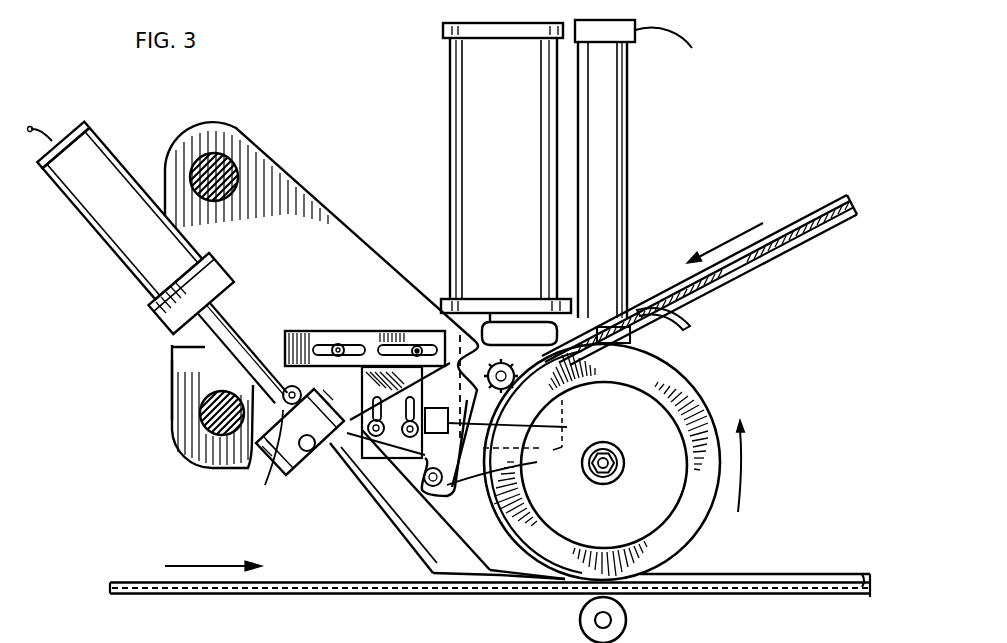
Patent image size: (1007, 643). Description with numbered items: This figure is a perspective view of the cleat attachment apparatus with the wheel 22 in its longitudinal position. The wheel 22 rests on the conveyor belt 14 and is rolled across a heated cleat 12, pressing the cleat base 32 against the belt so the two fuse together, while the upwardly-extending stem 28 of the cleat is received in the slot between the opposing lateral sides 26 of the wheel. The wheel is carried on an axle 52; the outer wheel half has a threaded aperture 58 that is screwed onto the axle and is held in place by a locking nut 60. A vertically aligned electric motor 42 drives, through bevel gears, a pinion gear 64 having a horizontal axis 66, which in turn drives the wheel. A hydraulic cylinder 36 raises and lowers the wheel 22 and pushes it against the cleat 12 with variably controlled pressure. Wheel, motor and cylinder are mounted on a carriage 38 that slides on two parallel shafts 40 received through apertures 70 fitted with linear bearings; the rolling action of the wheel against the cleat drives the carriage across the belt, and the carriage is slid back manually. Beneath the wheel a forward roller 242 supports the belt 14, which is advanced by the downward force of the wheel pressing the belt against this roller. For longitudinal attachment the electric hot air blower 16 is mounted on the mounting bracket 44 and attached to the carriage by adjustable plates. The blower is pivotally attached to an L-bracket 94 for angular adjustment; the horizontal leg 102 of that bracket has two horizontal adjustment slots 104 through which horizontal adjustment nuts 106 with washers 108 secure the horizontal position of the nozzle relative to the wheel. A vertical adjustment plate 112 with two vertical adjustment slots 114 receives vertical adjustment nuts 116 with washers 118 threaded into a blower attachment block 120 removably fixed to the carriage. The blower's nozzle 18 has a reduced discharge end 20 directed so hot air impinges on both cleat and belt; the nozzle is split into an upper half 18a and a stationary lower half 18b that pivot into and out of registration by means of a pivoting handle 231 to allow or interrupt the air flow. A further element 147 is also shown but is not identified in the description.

The cleat 12 is at (836, 230).
The conveyor belt 14 is at (755, 595).
The electric hot air blower 16 is at (122, 268).
The nozzle 18 is at (365, 515).
The upper half of nozzle 18a is at (222, 480).
The lower half of nozzle 18b is at (393, 530).
The discharge end 20 is at (563, 596).
The wheel 22 is at (688, 396).
The opposing lateral sides of wheel 26 is at (655, 444).
The stem of cleat 28 is at (795, 240).
The base of cleat 32 is at (820, 203).
The hydraulic cylinder 36 is at (618, 122).
The carriage 38 is at (171, 393).
The parallel shafts 40 is at (205, 463).
The electric motor 42 is at (463, 100).
The mounting bracket 44 is at (373, 308).
The axle 52 is at (605, 483).
The threaded aperture 58 is at (603, 463).
The locking nut 60 is at (585, 465).
The pinion gear 64 is at (490, 330).
The horizontal axis 66 is at (508, 362).
The apertures 70 is at (215, 152).
The L-bracket 94 is at (300, 335).
The horizontal leg of L-bracket 102 is at (258, 316).
The horizontal adjustment slots 104 is at (320, 343).
The horizontal adjustment nuts 106 is at (292, 348).
The washers 108 is at (386, 344).
The vertical adjustment plate 112 is at (504, 466).
The vertical adjustment slots 114 is at (345, 472).
The vertical adjustment nuts 116 is at (446, 486).
The washers 118 is at (372, 412).
The blower attachment block 120 is at (526, 425).
The fastener 147 is at (338, 330).
The pivoting handle 231 is at (259, 460).
The forward roller 242 is at (612, 620).